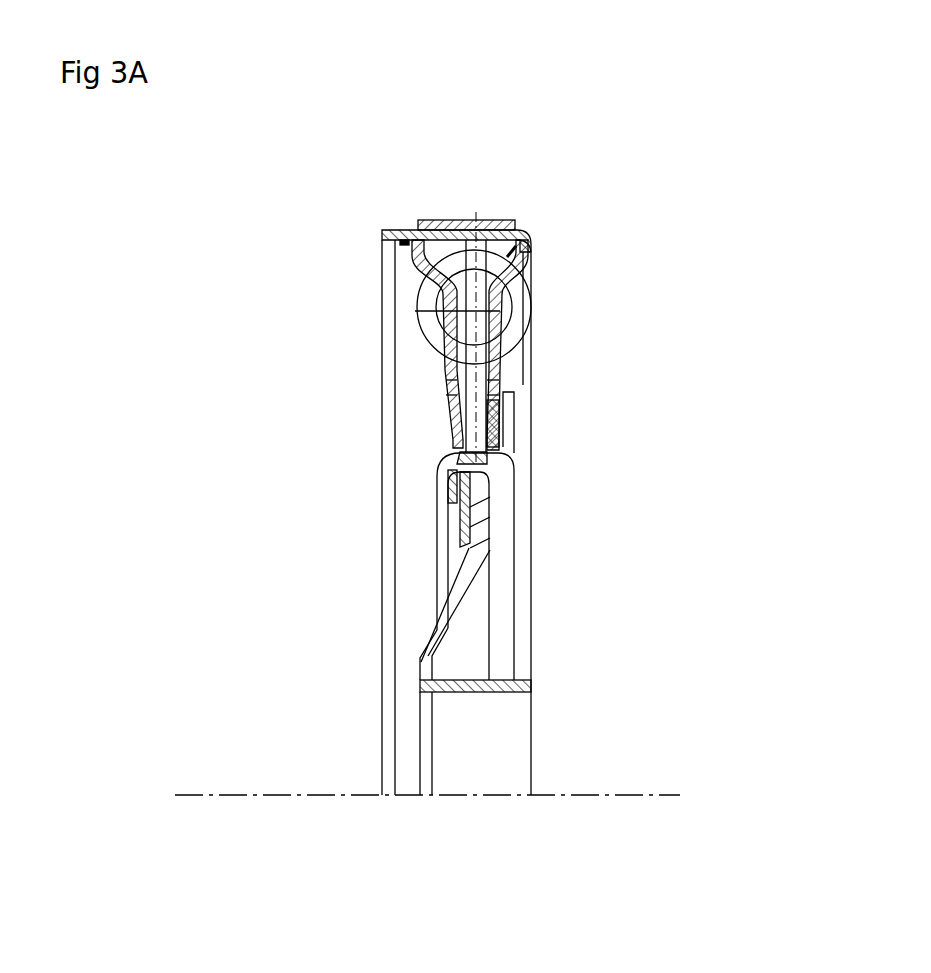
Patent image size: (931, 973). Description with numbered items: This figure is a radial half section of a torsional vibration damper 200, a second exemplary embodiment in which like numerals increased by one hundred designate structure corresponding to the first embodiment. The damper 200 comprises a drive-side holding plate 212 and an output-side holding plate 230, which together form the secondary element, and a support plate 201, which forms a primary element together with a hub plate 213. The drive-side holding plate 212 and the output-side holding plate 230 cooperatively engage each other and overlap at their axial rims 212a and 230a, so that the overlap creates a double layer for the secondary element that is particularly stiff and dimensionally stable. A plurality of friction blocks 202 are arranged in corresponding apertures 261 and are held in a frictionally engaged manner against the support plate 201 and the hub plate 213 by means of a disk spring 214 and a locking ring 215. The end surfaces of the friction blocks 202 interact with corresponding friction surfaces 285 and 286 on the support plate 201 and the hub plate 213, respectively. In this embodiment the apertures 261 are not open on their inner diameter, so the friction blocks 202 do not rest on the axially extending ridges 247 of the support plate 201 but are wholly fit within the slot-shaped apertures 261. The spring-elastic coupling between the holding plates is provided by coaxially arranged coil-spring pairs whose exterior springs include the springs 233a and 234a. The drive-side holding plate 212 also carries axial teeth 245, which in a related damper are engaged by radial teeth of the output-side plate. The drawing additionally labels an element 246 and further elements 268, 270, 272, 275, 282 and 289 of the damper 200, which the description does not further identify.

The torsional vibration damper 200 is at (318, 205).
The support plate 201 is at (508, 447).
The friction blocks 202 is at (512, 407).
The drive-side holding plate 212 is at (530, 277).
The axial rim 212a is at (524, 232).
The hub plate 213 is at (467, 579).
The disk spring 214 is at (465, 515).
The locking ring 215 is at (452, 486).
The output-side holding plate 230 is at (415, 312).
The axial rim 230a is at (462, 225).
The exterior spring 233a is at (502, 257).
The exterior spring 234a is at (510, 347).
The axial teeth 245 is at (405, 242).
The pin 246 is at (423, 237).
The axially extending ridges 247 is at (465, 458).
The apertures 261 is at (495, 438).
The ball 268 is at (498, 308).
The equator line 270 is at (447, 310).
The outer sphere 272 is at (470, 313).
The shell 275 is at (475, 477).
The flange 282 is at (503, 698).
The friction surface 285 is at (497, 412).
The friction surface 286 is at (468, 413).
The rounded corner 289 is at (443, 478).